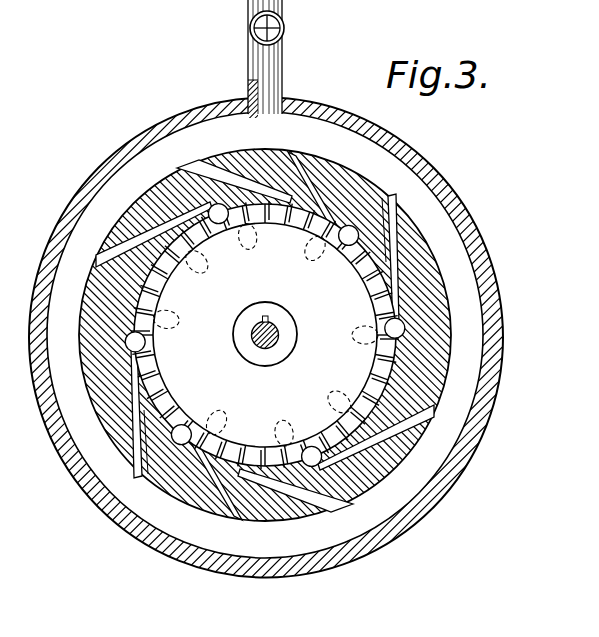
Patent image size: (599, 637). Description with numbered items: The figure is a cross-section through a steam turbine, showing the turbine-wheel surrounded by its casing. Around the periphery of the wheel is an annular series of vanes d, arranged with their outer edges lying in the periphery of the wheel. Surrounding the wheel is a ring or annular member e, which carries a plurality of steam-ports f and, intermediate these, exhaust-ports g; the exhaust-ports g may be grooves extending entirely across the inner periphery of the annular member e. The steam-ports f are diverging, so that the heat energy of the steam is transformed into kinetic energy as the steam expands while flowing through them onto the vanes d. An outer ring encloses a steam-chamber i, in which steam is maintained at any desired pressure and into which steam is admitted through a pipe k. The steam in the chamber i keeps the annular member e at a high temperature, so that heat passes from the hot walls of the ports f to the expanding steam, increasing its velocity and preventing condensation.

The vanes d is at (196, 452).
The annular member e is at (288, 503).
The steam-ports f is at (335, 510).
The exhaust-ports g is at (376, 481).
The steam-chamber i is at (367, 160).
The pipe k is at (285, 14).